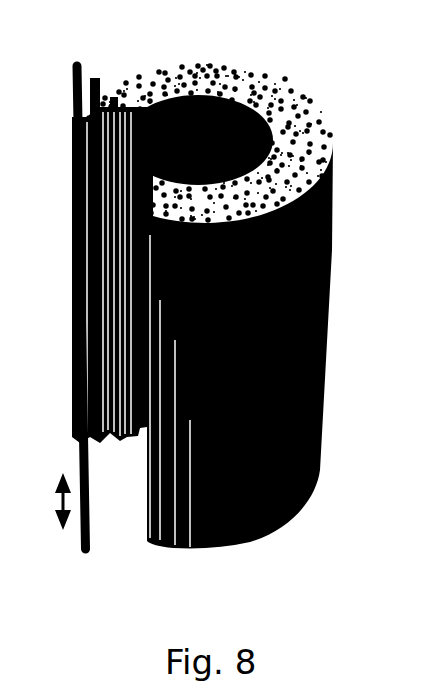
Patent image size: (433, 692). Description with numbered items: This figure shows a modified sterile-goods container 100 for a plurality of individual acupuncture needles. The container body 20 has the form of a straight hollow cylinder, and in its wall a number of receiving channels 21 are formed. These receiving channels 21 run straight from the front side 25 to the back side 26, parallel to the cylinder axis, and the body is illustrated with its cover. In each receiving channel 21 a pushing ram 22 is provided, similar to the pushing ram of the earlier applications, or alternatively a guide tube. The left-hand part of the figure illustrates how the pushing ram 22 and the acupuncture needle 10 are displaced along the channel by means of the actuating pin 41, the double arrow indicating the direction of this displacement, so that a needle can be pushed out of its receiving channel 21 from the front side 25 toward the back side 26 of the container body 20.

The filter element 100 is at (223, 299).
The container body 20 is at (148, 62).
The receiving channels 21 is at (268, 95).
The front side 25 is at (203, 67).
The back side 26 is at (263, 540).
The acupuncture needle 10 is at (89, 329).
The pushing ram 22 is at (78, 293).
The actuating pin 41 is at (83, 522).